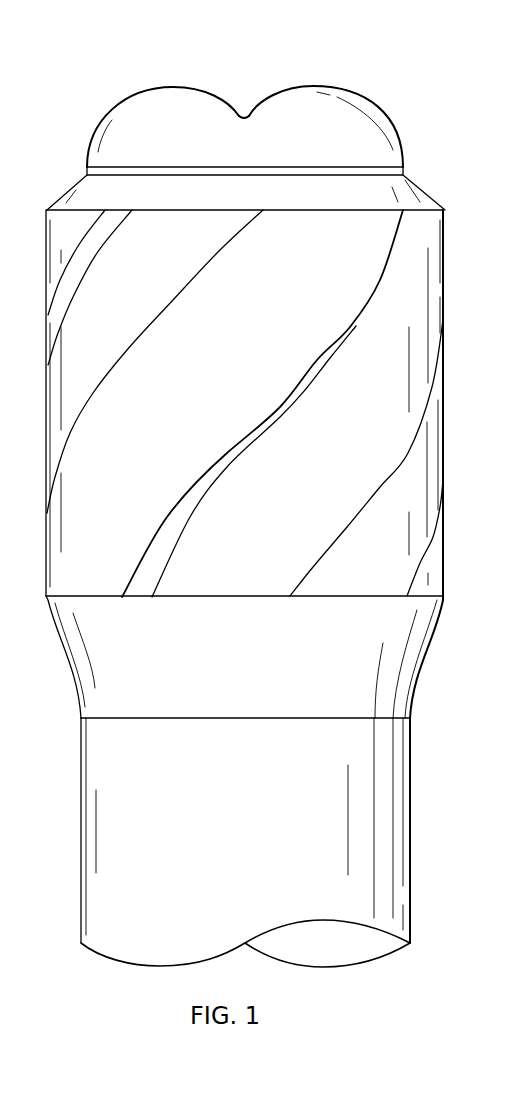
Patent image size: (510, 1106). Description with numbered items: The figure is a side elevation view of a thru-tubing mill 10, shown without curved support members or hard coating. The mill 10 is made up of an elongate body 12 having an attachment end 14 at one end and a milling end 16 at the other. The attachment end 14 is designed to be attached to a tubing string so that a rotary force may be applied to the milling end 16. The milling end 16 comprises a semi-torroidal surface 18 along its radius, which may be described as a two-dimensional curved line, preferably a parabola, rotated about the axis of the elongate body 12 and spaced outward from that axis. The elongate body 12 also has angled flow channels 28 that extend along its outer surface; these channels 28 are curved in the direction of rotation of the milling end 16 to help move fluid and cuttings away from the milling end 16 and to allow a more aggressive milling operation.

The thru-tubing mill 10 is at (112, 73).
The elongate body 12 is at (413, 677).
The attachment end 14 is at (402, 897).
The milling end 16 is at (403, 172).
The semi-torroidal surface 18 is at (385, 120).
The angled flow channels 28 is at (433, 287).